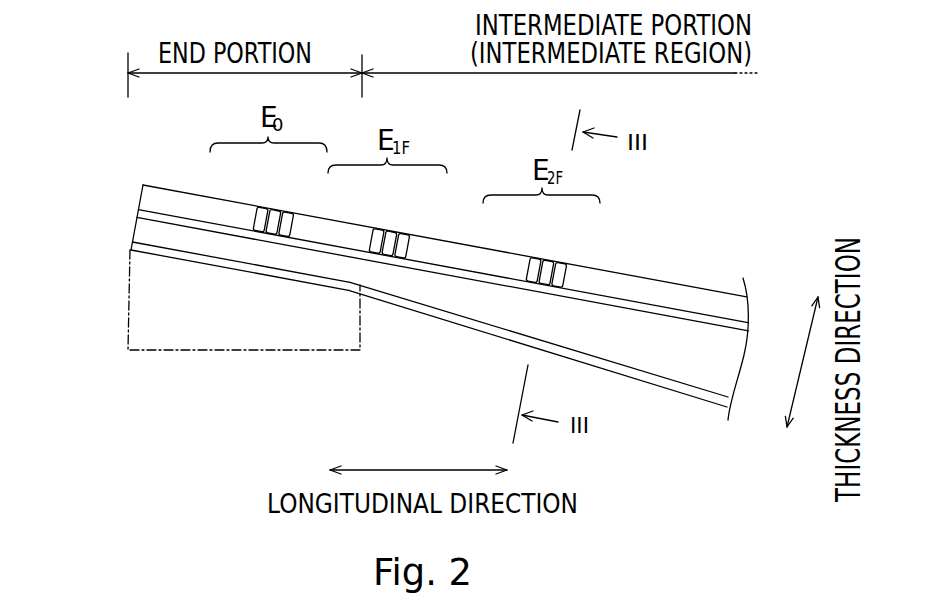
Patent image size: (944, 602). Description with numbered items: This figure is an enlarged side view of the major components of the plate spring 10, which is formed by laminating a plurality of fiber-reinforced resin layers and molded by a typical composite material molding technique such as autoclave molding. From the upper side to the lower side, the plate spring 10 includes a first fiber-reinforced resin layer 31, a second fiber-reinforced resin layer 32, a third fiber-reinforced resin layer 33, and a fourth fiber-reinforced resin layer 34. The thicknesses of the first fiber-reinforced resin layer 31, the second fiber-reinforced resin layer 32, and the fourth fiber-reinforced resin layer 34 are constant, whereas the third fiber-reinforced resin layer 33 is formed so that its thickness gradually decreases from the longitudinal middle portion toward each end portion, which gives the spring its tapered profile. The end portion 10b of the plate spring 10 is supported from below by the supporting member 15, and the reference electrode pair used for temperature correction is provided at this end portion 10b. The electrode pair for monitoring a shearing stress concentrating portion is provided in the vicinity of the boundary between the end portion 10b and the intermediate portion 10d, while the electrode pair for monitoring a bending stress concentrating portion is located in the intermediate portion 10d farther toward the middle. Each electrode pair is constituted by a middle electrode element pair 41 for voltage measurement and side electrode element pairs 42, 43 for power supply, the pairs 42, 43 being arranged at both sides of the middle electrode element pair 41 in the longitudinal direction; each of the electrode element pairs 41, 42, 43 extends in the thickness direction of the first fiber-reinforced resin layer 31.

The plate spring 10 is at (393, 277).
The end portion 10b is at (262, 265).
The intermediate portion 10d is at (482, 314).
The supporting member 15 is at (165, 353).
The first fiber-reinforced resin layer 31 is at (138, 192).
The second fiber-reinforced resin layer 32 is at (136, 212).
The third fiber-reinforced resin layer 33 is at (135, 228).
The fourth fiber-reinforced resin layer 34 is at (382, 336).
The middle electrode element pair 41 is at (276, 210).
The side electrode element pair 42 is at (262, 209).
The side electrode element pair 43 is at (289, 210).